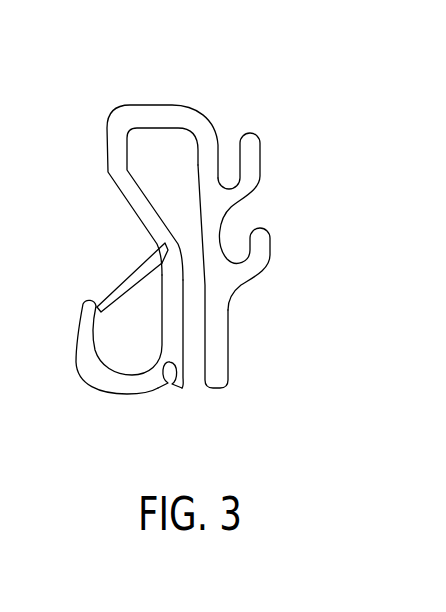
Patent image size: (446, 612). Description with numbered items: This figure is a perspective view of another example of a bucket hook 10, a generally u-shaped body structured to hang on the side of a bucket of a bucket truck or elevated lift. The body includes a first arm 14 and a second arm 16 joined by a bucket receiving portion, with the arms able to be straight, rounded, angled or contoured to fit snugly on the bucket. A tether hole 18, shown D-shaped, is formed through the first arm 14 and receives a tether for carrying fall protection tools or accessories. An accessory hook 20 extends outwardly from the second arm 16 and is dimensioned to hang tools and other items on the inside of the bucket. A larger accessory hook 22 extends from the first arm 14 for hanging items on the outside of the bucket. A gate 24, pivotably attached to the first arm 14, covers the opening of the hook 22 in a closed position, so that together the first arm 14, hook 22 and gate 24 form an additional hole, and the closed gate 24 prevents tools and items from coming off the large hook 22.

The bucket hook 10 is at (215, 240).
The first arm 14 is at (163, 243).
The second arm 16 is at (215, 343).
The tether hole 18 is at (169, 381).
The accessory hook 20 is at (256, 178).
The accessory hook 22 is at (82, 362).
The gate 24 is at (120, 288).